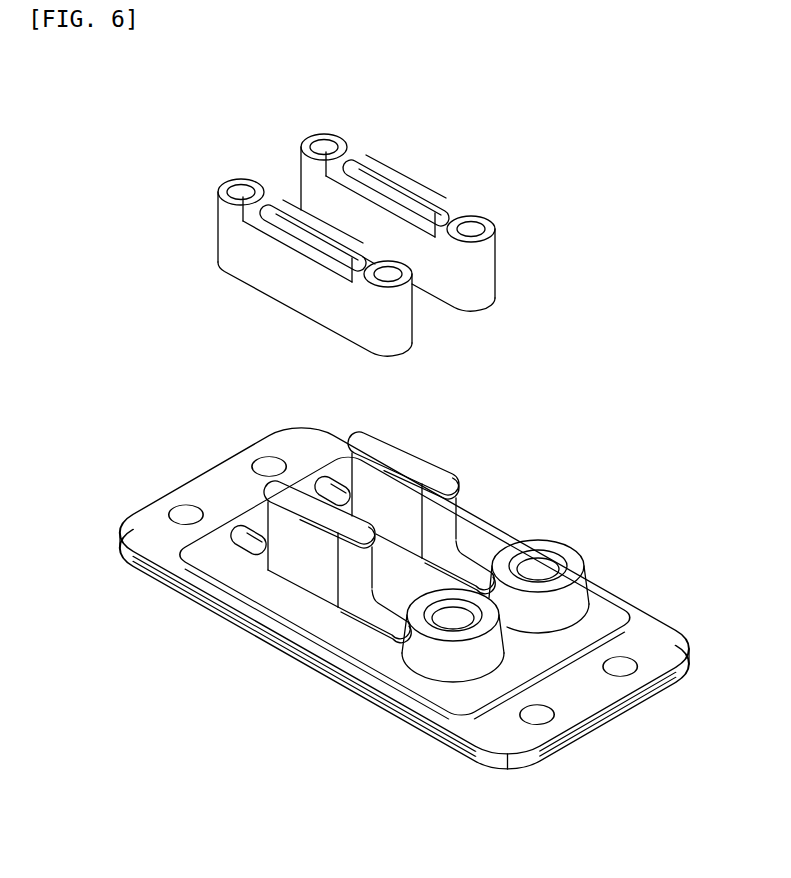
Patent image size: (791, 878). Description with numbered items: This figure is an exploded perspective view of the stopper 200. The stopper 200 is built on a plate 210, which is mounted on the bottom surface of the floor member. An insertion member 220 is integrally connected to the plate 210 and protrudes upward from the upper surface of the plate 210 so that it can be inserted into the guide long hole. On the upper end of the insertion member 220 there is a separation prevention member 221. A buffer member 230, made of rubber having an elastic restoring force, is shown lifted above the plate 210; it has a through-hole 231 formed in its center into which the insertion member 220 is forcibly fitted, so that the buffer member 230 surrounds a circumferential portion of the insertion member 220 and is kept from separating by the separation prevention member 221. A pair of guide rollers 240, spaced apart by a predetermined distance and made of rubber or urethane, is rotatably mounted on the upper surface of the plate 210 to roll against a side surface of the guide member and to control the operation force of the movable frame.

The stopper 200 is at (638, 133).
The plate 210 is at (606, 606).
The insertion member 220 is at (382, 527).
The separation prevention member 221 is at (449, 468).
The buffer member 230 is at (396, 229).
The through-hole 231 is at (390, 200).
The guide rollers 240 is at (567, 544).